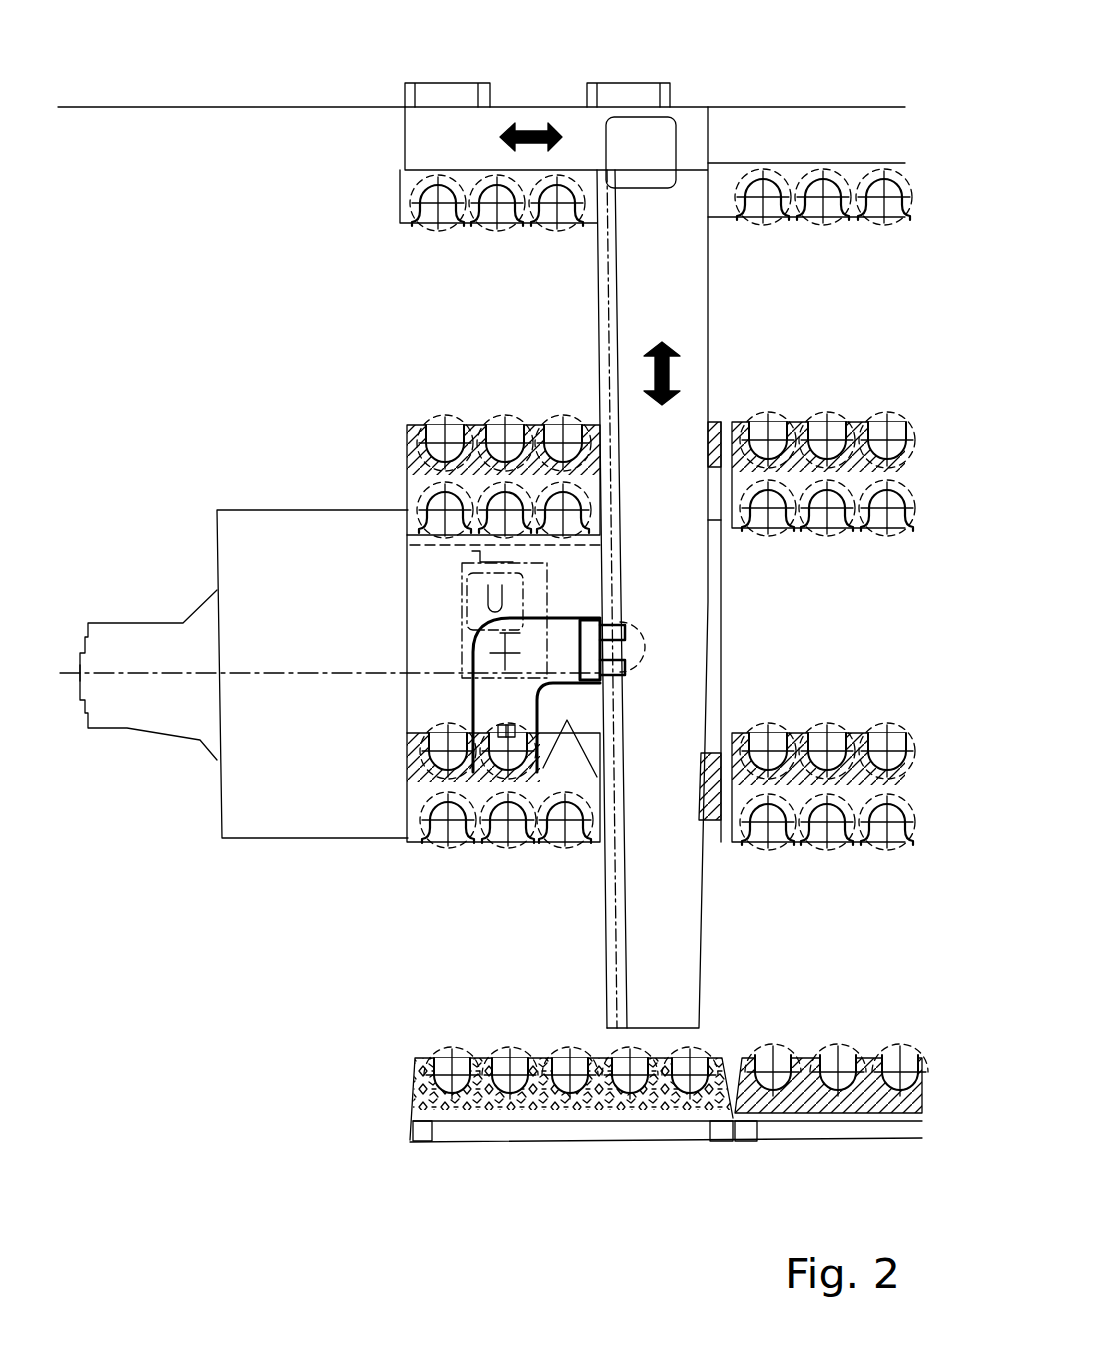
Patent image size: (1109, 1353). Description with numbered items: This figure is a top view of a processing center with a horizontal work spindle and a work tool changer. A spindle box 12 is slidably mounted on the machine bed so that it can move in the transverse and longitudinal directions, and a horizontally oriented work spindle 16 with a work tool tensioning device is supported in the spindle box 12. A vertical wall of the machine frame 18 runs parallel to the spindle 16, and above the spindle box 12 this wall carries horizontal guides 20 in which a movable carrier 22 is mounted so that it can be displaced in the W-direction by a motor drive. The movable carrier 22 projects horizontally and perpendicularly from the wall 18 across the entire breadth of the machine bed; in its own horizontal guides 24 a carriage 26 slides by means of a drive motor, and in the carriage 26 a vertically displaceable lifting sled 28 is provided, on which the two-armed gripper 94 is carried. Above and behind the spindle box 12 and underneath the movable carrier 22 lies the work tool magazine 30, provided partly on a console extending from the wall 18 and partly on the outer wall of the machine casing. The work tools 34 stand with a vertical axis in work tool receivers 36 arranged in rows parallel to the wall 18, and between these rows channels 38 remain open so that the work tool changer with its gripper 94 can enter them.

The spindle box 12 is at (290, 787).
The work spindle 16 is at (187, 715).
The machine frame wall 18 is at (176, 47).
The horizontal guides 20 is at (628, 92).
The movable carrier 22 is at (430, 143).
The horizontal guides of the movable carrier 24 is at (615, 872).
The carriage 26 is at (570, 567).
The lifting sled 28 is at (475, 602).
The work tool magazine 30 is at (856, 174).
The work tools 34 is at (493, 218).
The work tool receivers 36 is at (768, 1075).
The channels 38 is at (806, 339).
The gripper 94 is at (507, 690).